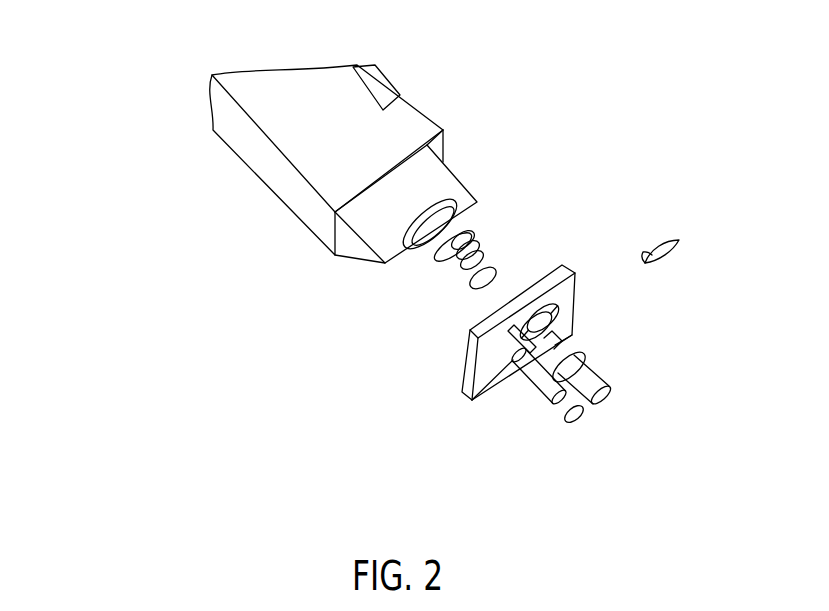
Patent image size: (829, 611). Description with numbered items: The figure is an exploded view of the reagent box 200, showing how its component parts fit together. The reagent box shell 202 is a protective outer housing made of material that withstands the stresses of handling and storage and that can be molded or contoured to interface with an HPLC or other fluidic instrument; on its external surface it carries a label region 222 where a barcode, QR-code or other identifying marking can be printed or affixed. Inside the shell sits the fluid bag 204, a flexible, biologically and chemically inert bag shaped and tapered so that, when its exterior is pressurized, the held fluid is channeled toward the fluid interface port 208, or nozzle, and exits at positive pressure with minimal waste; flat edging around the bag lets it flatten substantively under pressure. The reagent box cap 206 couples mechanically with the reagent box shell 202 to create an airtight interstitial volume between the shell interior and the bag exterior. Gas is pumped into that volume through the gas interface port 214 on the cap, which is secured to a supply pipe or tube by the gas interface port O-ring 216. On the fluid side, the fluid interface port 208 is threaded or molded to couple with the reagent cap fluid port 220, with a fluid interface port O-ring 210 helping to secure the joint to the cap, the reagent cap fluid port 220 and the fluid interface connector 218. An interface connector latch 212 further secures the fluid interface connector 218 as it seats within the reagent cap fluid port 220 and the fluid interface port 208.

The reagent box 200 is at (118, 140).
The reagent box shell 202 is at (268, 187).
The fluid bag 204 is at (457, 182).
The reagent box cap 206 is at (460, 386).
The fluid interface port 208 is at (473, 240).
The fluid interface port O-ring 210 is at (497, 270).
The interface connector latch 212 is at (677, 243).
The gas interface port 214 is at (542, 393).
The gas interface port O-ring 216 is at (565, 417).
The fluid interface connector 218 is at (590, 370).
The reagent cap fluid port 220 is at (577, 311).
The label region 222 is at (377, 90).